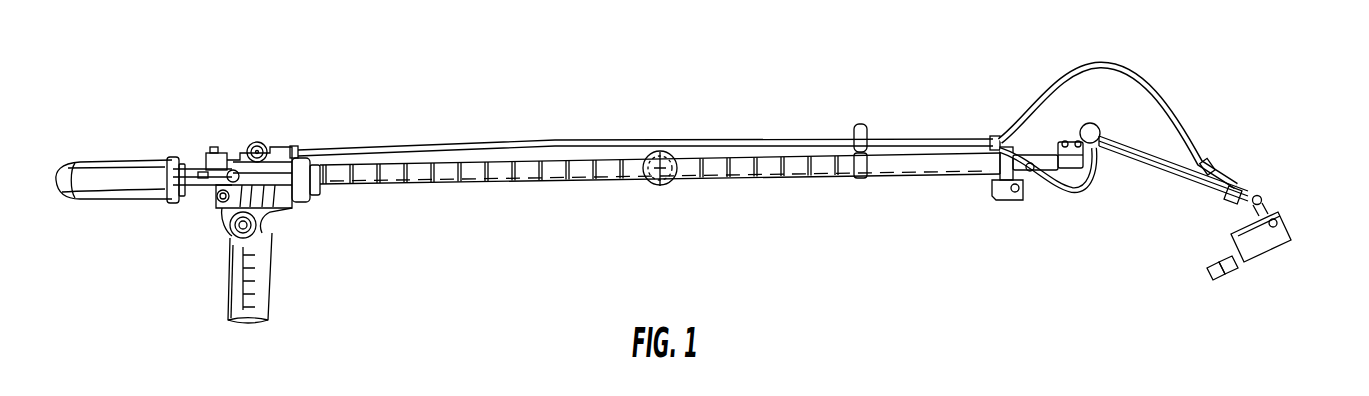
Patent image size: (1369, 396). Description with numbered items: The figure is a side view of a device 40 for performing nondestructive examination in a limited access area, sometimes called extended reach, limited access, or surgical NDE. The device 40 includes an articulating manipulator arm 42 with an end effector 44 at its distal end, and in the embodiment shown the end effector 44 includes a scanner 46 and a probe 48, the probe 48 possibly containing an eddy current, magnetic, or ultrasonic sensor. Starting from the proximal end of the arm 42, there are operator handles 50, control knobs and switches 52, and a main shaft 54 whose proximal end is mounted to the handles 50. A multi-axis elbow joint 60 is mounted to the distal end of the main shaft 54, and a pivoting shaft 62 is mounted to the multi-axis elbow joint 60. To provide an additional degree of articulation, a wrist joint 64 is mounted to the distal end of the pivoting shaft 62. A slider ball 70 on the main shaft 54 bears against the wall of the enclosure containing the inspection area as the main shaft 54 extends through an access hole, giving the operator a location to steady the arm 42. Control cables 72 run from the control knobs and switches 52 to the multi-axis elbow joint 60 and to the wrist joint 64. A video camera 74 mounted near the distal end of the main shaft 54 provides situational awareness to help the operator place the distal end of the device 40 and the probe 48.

The device 40 is at (924, 66).
The articulating manipulator arm 42 is at (799, 188).
The end effector 44 is at (1285, 252).
The scanner 46 is at (1254, 247).
The probe 48 is at (1219, 273).
The operator handles 50 is at (143, 182).
The control knobs and switches 52 is at (212, 152).
The main shaft 54 is at (586, 173).
The multi-axis elbow joint 60 is at (1084, 124).
The pivoting shaft 62 is at (1166, 177).
The wrist joint 64 is at (1262, 194).
The slider ball 70 is at (661, 180).
The control cables 72 is at (750, 142).
The video camera 74 is at (1003, 201).